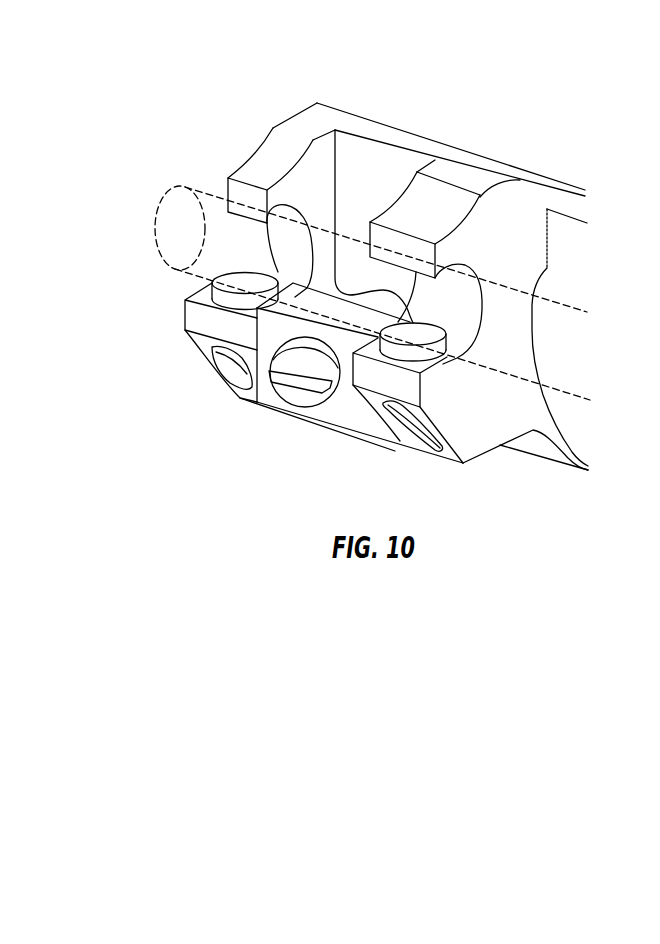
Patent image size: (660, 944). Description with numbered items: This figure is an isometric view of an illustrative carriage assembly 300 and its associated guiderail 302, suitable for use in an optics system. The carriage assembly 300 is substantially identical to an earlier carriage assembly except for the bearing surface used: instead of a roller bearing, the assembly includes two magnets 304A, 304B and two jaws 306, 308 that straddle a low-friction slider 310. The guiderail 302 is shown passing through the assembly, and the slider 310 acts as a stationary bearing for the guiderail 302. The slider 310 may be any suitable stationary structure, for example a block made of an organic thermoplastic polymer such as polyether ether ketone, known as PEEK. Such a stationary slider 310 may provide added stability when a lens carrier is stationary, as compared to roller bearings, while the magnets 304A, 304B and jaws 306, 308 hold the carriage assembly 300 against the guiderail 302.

The carriage assembly 300 is at (163, 456).
The guiderail 302 is at (170, 222).
The magnet 304A is at (425, 336).
The magnet 304B is at (247, 282).
The jaw 306 is at (490, 262).
The jaw 308 is at (226, 159).
The low-friction slider 310 is at (306, 413).